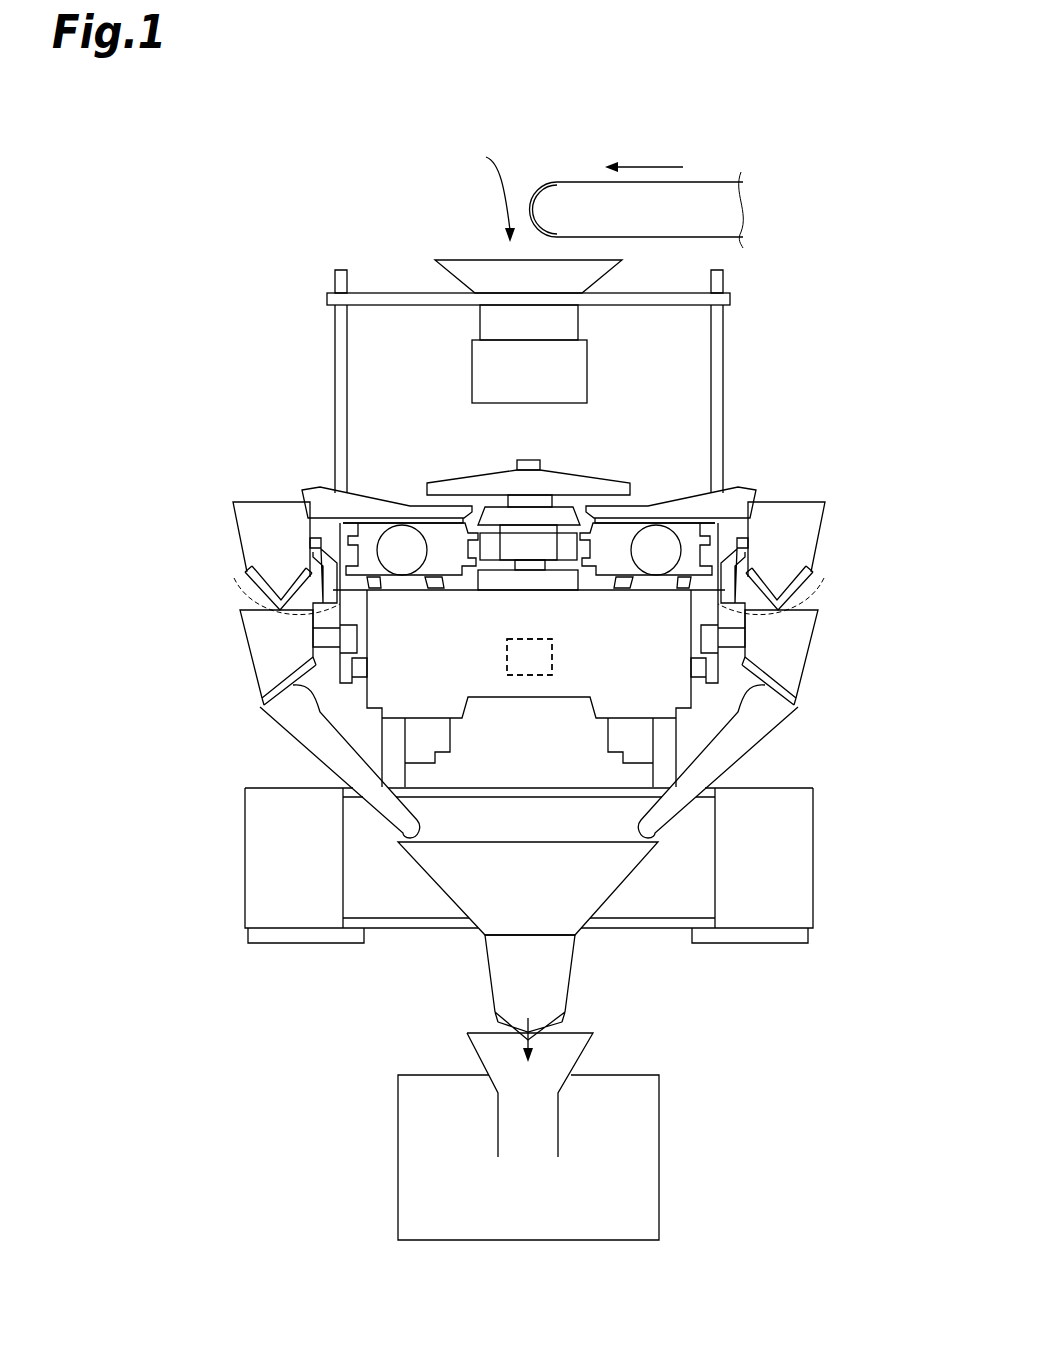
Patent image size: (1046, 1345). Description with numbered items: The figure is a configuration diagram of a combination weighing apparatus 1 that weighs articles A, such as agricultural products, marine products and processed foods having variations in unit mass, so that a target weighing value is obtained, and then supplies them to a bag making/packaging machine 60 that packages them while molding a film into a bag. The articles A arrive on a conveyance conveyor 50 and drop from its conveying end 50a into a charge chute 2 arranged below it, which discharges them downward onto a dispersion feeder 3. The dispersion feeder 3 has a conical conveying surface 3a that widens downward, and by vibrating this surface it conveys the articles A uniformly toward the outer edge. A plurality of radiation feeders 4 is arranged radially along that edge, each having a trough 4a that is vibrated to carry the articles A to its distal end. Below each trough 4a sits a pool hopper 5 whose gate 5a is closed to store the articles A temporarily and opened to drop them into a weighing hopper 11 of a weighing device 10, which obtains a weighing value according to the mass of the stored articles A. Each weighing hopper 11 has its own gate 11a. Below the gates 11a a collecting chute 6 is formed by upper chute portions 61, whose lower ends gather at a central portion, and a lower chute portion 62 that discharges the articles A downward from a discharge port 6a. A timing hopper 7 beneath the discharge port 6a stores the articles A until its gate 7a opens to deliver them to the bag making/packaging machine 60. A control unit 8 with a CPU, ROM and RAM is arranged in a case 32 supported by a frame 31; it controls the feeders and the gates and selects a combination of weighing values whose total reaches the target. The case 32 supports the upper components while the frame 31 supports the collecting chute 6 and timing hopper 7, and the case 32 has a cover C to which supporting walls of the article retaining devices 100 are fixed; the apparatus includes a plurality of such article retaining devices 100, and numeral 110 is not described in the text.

The combination weighing apparatus 1 is at (270, 160).
The charge chute 2 is at (470, 262).
The dispersion feeder 3 is at (578, 485).
The conveying surface 3a is at (458, 478).
The radiation feeder 4 is at (317, 498).
The trough 4a is at (358, 503).
The pool hopper 5 is at (245, 525).
The gate 5a is at (255, 597).
The collecting chute 6 is at (528, 844).
The discharge port 6a is at (513, 937).
The timing hopper 7 is at (553, 983).
The gate 7a is at (508, 1027).
The control unit 8 is at (522, 683).
The weighing device 10 is at (230, 626).
The weighing hopper 11 is at (258, 650).
The gate 11a is at (277, 678).
The frame 31 is at (800, 837).
The case 32 is at (545, 683).
The conveyance conveyor 50 is at (702, 195).
The conveying end 50a is at (540, 207).
The bag making/packaging machine 60 is at (647, 1142).
The upper chute portion 61 is at (312, 740).
The lower chute portion 62 is at (602, 882).
The article retaining device 100 is at (190, 469).
The load cell 110 is at (307, 555).
The articles A is at (496, 185).
The cover C is at (257, 607).